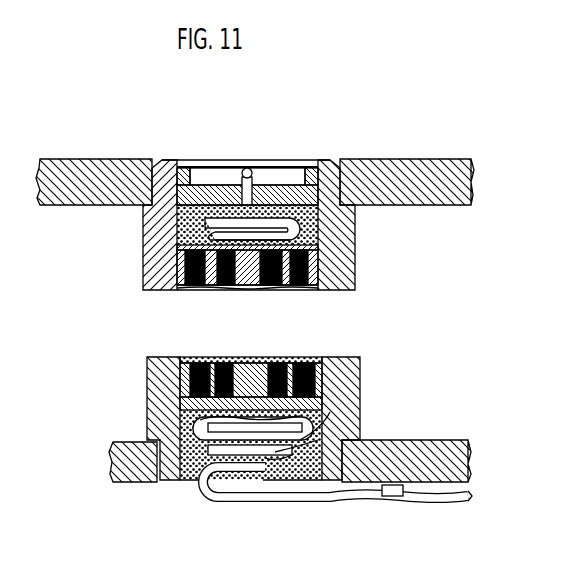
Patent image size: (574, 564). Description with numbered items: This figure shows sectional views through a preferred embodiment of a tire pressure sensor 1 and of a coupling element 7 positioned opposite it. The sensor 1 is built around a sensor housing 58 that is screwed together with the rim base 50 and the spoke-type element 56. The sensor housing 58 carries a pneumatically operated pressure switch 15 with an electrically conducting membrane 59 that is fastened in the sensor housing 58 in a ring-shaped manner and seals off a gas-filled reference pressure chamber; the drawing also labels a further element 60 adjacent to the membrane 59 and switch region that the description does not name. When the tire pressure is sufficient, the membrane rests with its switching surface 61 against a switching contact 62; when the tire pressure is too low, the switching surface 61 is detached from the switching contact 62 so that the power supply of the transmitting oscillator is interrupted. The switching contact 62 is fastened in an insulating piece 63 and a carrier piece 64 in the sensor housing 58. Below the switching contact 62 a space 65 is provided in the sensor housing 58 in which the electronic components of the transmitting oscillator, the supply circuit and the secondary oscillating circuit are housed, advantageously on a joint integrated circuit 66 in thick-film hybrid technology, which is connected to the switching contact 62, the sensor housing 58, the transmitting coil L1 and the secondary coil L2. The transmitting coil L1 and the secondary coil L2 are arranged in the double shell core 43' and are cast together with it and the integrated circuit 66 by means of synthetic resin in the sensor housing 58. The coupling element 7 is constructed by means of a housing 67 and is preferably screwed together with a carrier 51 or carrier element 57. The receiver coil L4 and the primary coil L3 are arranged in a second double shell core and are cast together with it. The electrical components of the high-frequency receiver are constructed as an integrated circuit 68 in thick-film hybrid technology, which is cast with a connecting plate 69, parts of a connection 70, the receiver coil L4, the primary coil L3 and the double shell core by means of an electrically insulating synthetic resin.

The sensor 1 is at (258, 205).
The coupling element 7 is at (293, 426).
The pneumatically operated pressure switch 15 is at (270, 167).
The double shell core 43' is at (210, 296).
The rim base 50 is at (258, 155).
The spoke-type element 56 is at (427, 159).
The carrier 51 is at (293, 445).
The carrier element 57 is at (414, 440).
The sensor housing 58 is at (356, 263).
The electrically conducting membrane 59 is at (296, 167).
The seal 60 is at (313, 167).
The switching surface 61 is at (228, 167).
The switching contact 62 is at (212, 169).
The insulating piece 63 is at (320, 207).
The carrier piece 64 is at (186, 219).
The space 65 is at (200, 229).
The integrated circuit 66 is at (210, 240).
The housing 67 is at (360, 363).
The integrated circuit 68 is at (326, 409).
The connecting plate 69 is at (340, 431).
The connection 70 is at (218, 503).
The transmitting coil L1 is at (197, 292).
The secondary coil L2 is at (217, 292).
The primary coil L3 is at (223, 361).
The receiver coil L4 is at (199, 361).